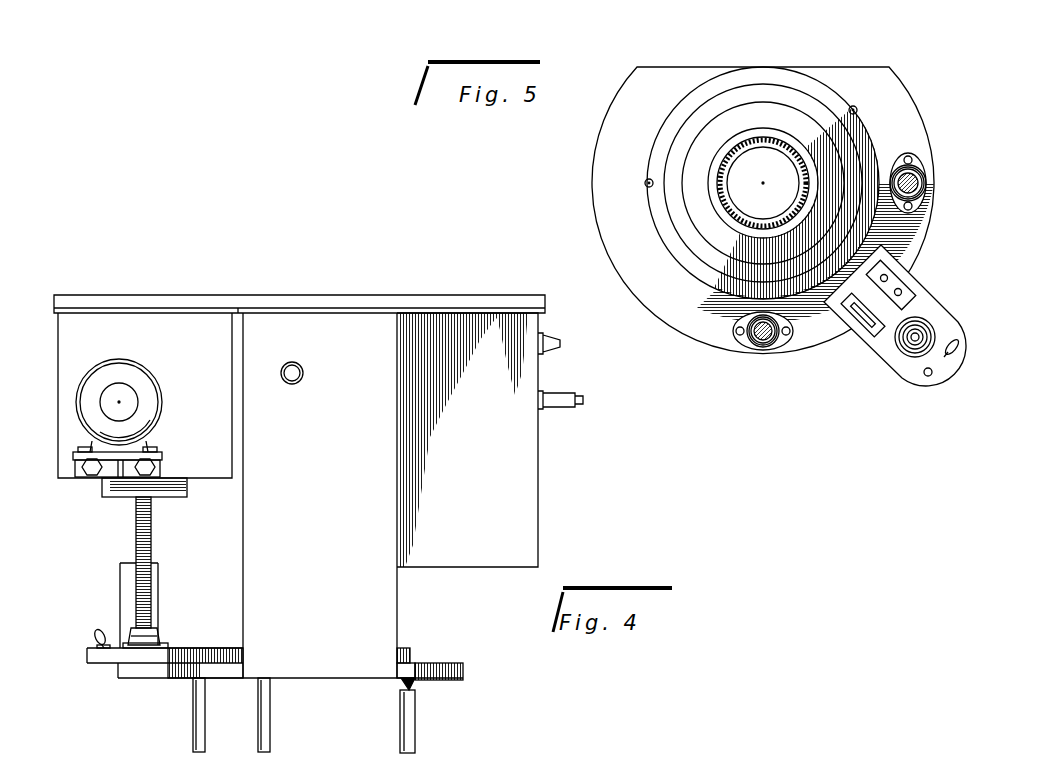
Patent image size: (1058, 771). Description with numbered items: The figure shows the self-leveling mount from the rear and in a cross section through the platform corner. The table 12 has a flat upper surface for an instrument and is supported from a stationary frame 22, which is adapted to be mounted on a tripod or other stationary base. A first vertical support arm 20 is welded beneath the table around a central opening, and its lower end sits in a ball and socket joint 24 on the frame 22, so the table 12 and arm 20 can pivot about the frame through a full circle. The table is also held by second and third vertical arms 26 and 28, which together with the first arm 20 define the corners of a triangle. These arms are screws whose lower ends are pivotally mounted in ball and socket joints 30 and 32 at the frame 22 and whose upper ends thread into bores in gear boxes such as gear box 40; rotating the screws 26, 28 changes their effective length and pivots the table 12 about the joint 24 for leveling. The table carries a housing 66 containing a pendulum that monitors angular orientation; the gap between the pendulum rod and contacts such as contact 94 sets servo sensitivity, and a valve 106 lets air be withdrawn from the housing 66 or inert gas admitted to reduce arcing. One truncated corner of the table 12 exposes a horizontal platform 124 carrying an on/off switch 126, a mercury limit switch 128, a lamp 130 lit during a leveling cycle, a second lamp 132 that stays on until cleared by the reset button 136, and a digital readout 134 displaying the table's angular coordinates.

In FIG. 4, the table 12 is at (463, 300).
In FIG. 5, the first vertical support arm 20 is at (780, 143).
In FIG. 4, the stationary frame 22 is at (448, 662).
In FIG. 5, the stationary frame 22 is at (902, 98).
In FIG. 5, the ball and socket joint 24 is at (703, 220).
In FIG. 4, the second vertical arm 26 is at (270, 727).
In FIG. 5, the second vertical arm 26 is at (765, 340).
In FIG. 4, the third vertical arm 28 is at (152, 547).
In FIG. 5, the third vertical arm 28 is at (910, 177).
In FIG. 5, the ball and socket joint 30 is at (737, 352).
In FIG. 4, the ball and socket joint 32 is at (157, 643).
In FIG. 5, the ball and socket joint 32 is at (925, 172).
In FIG. 4, the gear box 40 is at (183, 327).
In FIG. 4, the housing 66 is at (527, 528).
In FIG. 4, the contact 94 is at (122, 387).
In FIG. 4, the valve 106 is at (298, 378).
In FIG. 4, the horizontal platform 124 is at (108, 657).
In FIG. 5, the horizontal platform 124 is at (923, 307).
In FIG. 4, the on/off switch 126 is at (100, 633).
In FIG. 5, the on/off switch 126 is at (947, 370).
In FIG. 4, the mercury limit switch 128 is at (158, 587).
In FIG. 5, the mercury limit switch 128 is at (902, 352).
In FIG. 5, the lamp 130 is at (923, 382).
In FIG. 5, the lamp 132 is at (910, 275).
In FIG. 5, the digital readout 134 is at (863, 330).
In FIG. 5, the reset button 136 is at (883, 270).